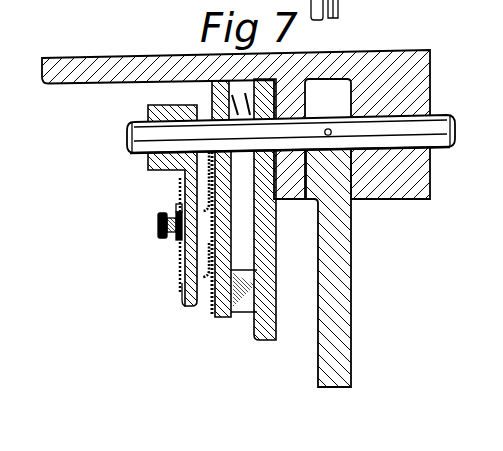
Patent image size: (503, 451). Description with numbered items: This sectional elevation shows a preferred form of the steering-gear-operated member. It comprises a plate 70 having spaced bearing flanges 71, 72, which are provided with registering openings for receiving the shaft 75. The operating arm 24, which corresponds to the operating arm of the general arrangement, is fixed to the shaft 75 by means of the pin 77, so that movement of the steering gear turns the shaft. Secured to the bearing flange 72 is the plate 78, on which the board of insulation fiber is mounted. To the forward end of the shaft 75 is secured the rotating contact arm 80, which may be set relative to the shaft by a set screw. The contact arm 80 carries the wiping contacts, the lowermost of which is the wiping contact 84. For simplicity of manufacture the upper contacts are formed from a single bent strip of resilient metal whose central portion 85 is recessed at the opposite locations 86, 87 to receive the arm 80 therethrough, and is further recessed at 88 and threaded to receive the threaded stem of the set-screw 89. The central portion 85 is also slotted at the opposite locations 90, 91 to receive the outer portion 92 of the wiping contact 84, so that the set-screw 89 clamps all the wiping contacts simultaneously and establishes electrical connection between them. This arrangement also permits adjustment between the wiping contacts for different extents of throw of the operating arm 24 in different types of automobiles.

The operating arm 24 is at (333, 288).
The plate 70 is at (105, 67).
The bearing flange 71 is at (391, 186).
The bearing flange 72 is at (293, 188).
The shaft 75 is at (431, 127).
The pin 77 is at (329, 129).
The plate 78 is at (268, 335).
The rotating contact arm 80 is at (190, 304).
The wiping contact 84 is at (198, 308).
The central portion 85 is at (163, 250).
The recess 86 is at (203, 192).
The recess 87 is at (178, 289).
The recess 88 is at (177, 241).
The set-screw 89 is at (160, 225).
The slot 90 is at (202, 256).
The slot 91 is at (178, 210).
The outer portion 92 is at (180, 285).